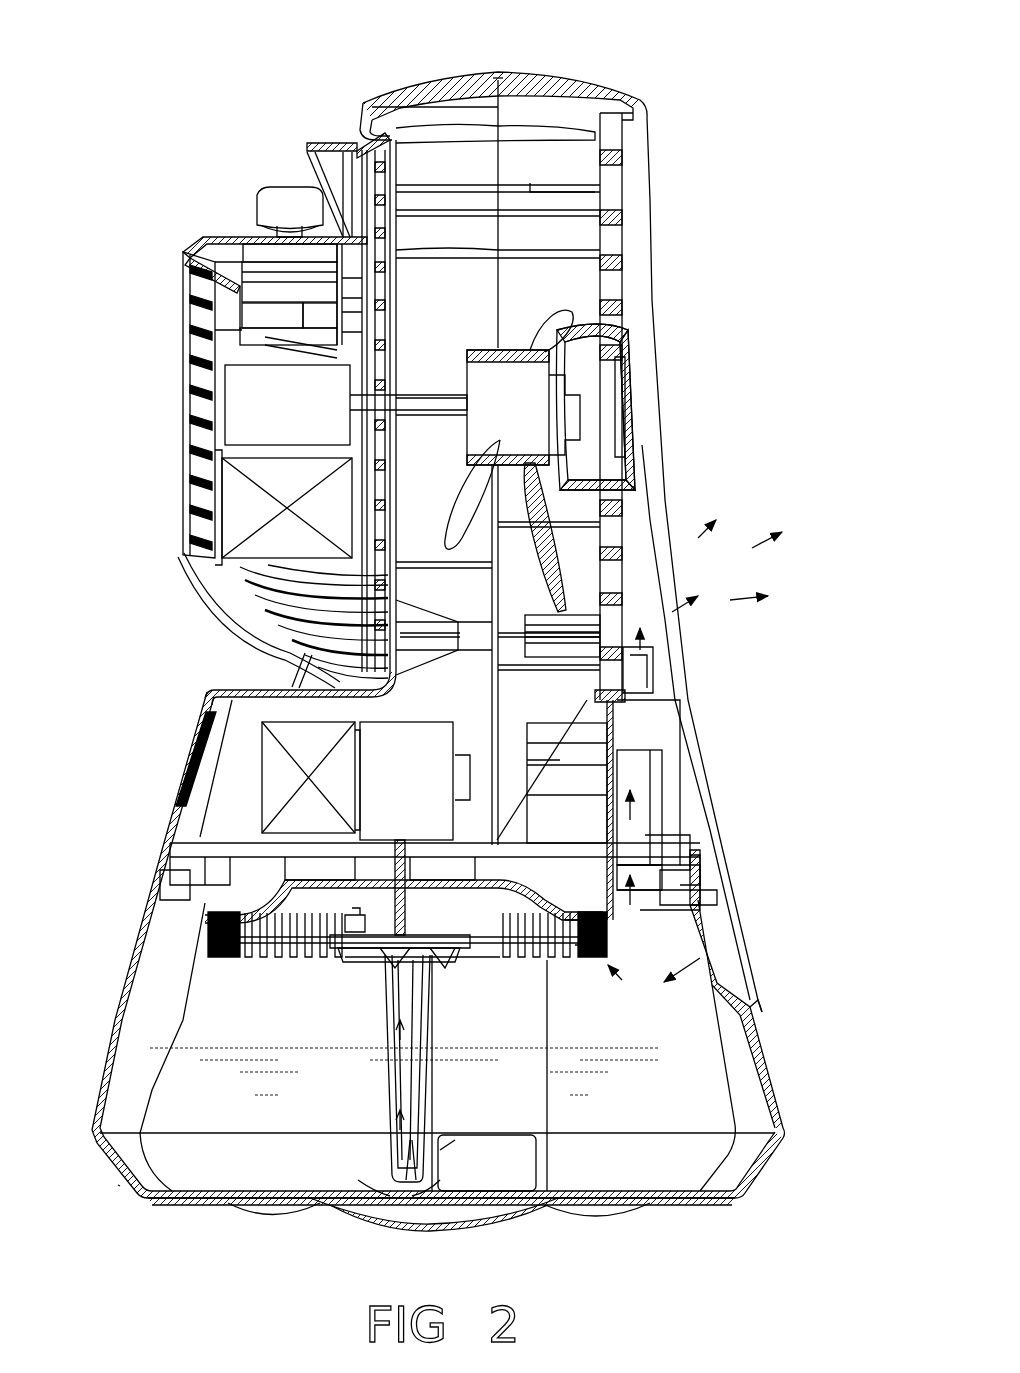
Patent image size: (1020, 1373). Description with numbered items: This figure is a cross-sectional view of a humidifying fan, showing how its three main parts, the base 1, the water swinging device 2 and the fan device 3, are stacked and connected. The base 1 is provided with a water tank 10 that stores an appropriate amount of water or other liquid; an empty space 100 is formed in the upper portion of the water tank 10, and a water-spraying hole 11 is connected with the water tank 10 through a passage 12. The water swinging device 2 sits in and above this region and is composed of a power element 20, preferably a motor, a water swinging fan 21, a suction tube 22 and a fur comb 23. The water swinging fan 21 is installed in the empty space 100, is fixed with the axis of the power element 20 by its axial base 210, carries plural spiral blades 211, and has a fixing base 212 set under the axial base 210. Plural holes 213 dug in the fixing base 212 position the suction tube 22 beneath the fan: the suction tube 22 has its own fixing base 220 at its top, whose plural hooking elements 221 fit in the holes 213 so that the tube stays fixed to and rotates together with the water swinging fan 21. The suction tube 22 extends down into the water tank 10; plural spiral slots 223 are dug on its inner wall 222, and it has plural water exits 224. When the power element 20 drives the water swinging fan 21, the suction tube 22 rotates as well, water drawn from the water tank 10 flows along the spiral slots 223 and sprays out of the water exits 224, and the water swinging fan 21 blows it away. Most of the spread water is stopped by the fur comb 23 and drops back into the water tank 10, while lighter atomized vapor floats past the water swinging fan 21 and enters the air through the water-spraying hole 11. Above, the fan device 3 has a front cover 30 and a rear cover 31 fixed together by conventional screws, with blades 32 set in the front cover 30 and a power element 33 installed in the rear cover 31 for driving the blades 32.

The base 1 is at (116, 1180).
The water tank 10 is at (778, 1075).
The empty space 100 is at (760, 918).
The water-spraying hole 11 is at (655, 690).
The passage 12 is at (648, 762).
The water swinging device 2 is at (250, 725).
The power element 20 is at (395, 745).
The water swinging fan 21 is at (545, 960).
The axial base 210 is at (398, 925).
The spiral blades 211 is at (560, 890).
The fixing base 212 is at (430, 930).
The holes 213 is at (345, 925).
The suction tube 22 is at (425, 1060).
The fixing base 220 is at (365, 962).
The hooking elements 221 is at (358, 925).
The inner wall 222 is at (400, 1060).
The spiral slots 223 is at (398, 1155).
The water exits 224 is at (452, 960).
The fur comb 23 is at (250, 958).
The fan device 3 is at (660, 248).
The front cover 30 is at (560, 85).
The rear cover 31 is at (440, 85).
The blades 32 is at (545, 540).
The power element 33 is at (265, 405).